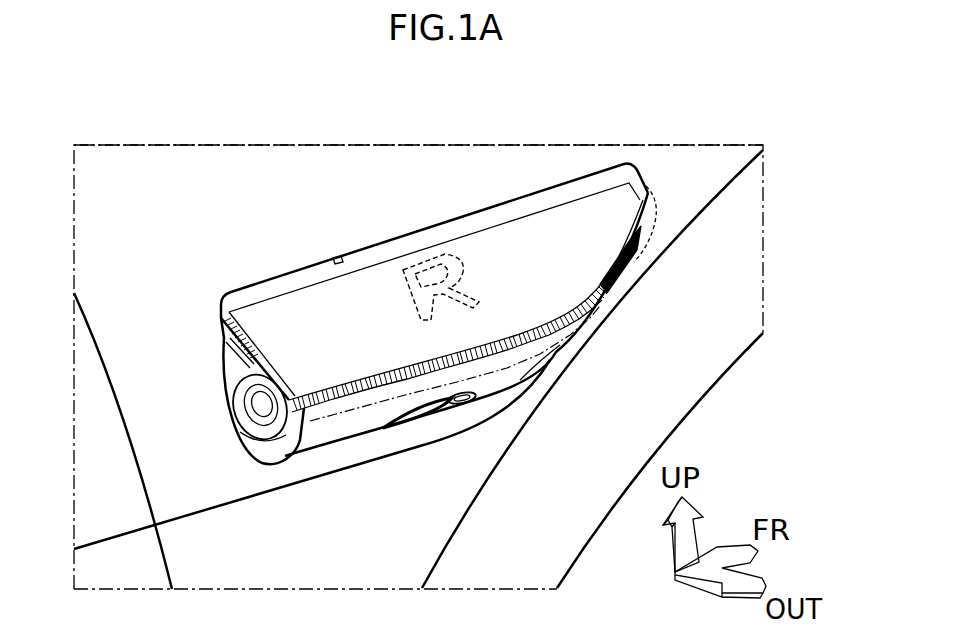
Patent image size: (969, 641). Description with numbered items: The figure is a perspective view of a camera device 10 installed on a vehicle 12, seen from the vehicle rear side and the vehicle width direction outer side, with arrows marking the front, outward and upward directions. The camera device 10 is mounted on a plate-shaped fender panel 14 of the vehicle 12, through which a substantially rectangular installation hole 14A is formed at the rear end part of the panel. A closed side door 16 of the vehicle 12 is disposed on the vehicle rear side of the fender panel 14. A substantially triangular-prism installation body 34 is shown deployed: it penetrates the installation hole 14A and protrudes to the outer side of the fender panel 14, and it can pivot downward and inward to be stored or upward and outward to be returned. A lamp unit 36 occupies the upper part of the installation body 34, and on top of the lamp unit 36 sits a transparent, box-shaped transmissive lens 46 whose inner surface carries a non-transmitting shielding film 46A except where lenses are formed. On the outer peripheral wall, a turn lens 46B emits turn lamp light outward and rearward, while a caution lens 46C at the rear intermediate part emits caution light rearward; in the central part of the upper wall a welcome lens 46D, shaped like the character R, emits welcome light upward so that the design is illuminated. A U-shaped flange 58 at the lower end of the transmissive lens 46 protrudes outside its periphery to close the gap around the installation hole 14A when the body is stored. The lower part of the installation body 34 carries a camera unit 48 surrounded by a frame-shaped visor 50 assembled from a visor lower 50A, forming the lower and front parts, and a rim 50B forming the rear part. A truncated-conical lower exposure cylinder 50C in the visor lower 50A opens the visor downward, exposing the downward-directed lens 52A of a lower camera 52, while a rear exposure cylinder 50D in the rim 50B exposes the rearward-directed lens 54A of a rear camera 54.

The camera device 10 is at (269, 226).
The vehicle 12 is at (440, 150).
The fender panel 14 is at (157, 160).
The installation hole 14A is at (337, 262).
The side door 16 is at (94, 343).
The installation body 34 is at (646, 155).
The lamp unit 36 is at (495, 193).
The transmissive lens 46 is at (390, 324).
The shielding film 46A is at (254, 298).
The turn lens 46B is at (324, 402).
The caution lens 46C is at (222, 343).
The welcome lens 46D is at (470, 272).
The camera unit 48 is at (526, 387).
The visor 50 is at (368, 358).
The visor lower 50A is at (497, 381).
The rim 50B is at (233, 372).
The lower exposure cylinder 50C is at (452, 405).
The rear exposure cylinder 50D is at (243, 434).
The lower camera 52 is at (401, 461).
The lens 52A is at (420, 425).
The rear camera 54 is at (192, 407).
The lens 54A is at (245, 406).
The flange 58 is at (538, 361).